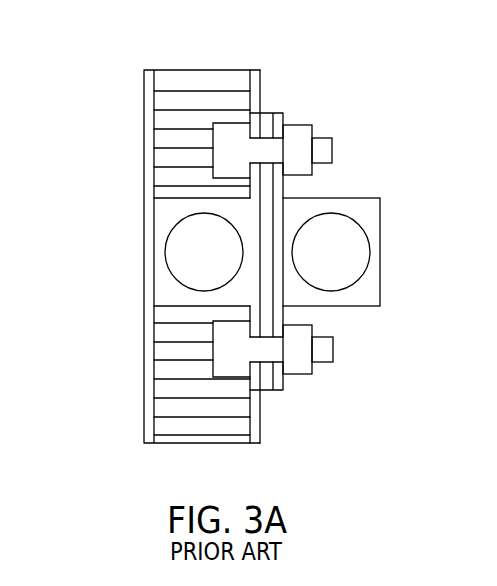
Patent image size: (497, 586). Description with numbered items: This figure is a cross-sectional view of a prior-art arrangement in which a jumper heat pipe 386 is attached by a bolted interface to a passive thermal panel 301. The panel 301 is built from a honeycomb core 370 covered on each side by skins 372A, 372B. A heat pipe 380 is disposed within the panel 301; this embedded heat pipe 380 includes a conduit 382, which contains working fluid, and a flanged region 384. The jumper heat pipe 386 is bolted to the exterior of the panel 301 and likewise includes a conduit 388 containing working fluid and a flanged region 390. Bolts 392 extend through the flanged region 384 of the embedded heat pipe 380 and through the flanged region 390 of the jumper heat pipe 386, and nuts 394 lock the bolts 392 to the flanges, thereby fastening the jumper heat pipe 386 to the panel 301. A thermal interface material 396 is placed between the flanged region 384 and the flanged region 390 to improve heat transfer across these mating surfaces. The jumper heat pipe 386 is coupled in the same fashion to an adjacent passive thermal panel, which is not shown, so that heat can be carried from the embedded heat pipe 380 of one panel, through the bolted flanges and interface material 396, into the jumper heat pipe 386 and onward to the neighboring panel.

The passive thermal panel 301 is at (82, 100).
The honeycomb core 370 is at (181, 70).
The skin 372A is at (148, 436).
The skin 372B is at (255, 435).
The heat pipe 380 is at (160, 298).
The conduit 382 is at (167, 252).
The flanged region 384 is at (252, 122).
The jumper heat pipe 386 is at (367, 210).
The conduit 388 is at (360, 250).
The flanged region 390 is at (278, 118).
The bolts 392 is at (330, 345).
The nuts 394 is at (307, 365).
The thermal interface material 396 is at (270, 197).